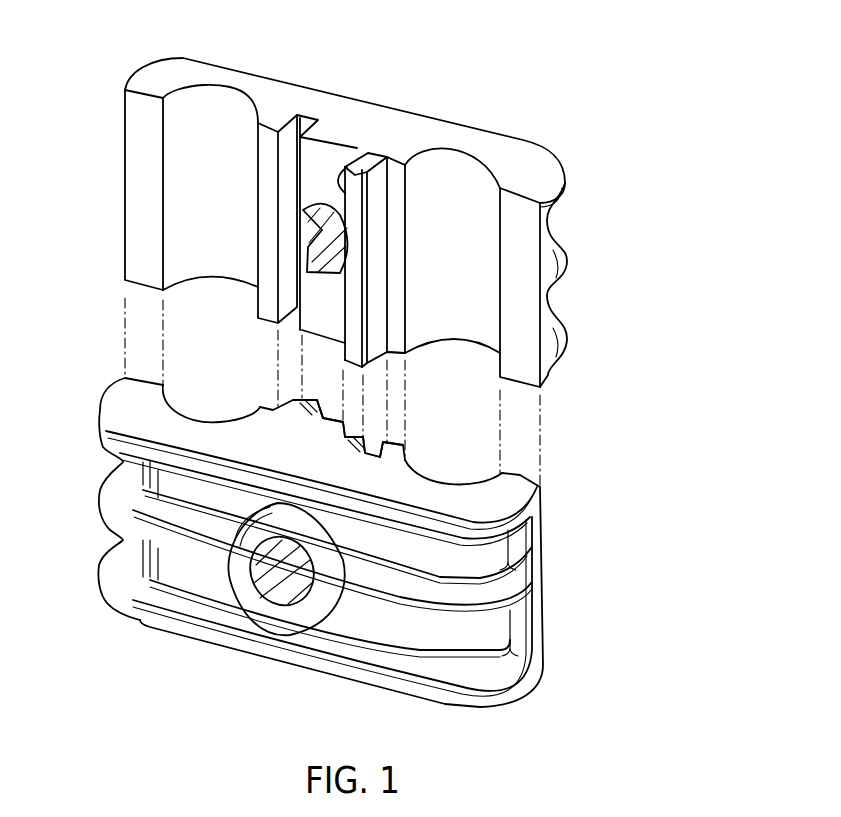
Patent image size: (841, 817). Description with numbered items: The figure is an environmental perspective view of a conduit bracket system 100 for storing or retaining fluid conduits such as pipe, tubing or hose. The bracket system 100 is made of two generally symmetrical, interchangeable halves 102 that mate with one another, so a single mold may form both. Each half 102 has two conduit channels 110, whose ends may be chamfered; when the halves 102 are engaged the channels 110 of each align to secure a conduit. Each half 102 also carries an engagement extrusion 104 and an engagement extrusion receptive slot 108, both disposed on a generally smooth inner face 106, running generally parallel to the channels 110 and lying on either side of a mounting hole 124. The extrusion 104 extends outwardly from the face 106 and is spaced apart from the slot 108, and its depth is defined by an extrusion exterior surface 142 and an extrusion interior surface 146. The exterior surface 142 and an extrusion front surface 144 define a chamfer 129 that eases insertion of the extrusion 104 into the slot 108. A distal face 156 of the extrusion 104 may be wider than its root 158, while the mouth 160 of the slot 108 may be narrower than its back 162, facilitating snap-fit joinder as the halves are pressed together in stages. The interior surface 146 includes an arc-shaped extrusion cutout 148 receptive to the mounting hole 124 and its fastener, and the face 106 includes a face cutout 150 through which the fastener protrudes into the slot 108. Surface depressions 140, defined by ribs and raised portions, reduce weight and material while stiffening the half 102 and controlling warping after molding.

The conduit bracket system 100 is at (672, 160).
The half 102 is at (141, 61).
The engagement extrusion 104 is at (374, 149).
The face 106 is at (333, 419).
The engagement extrusion receptive slot 108 is at (313, 107).
The conduit channel 110 is at (207, 106).
The mounting hole 124 is at (300, 264).
The chamfer 129 is at (363, 297).
The surface depressions 140 is at (487, 633).
The extrusion exterior surface 142 is at (380, 278).
The extrusion front surface 144 is at (353, 322).
The extrusion interior surface 146 is at (365, 157).
The extrusion cutout 148 is at (298, 336).
The face cutout 150 is at (310, 223).
The distal face 156 is at (375, 181).
The root 158 is at (392, 164).
The mouth 160 is at (268, 124).
The back 162 is at (282, 108).